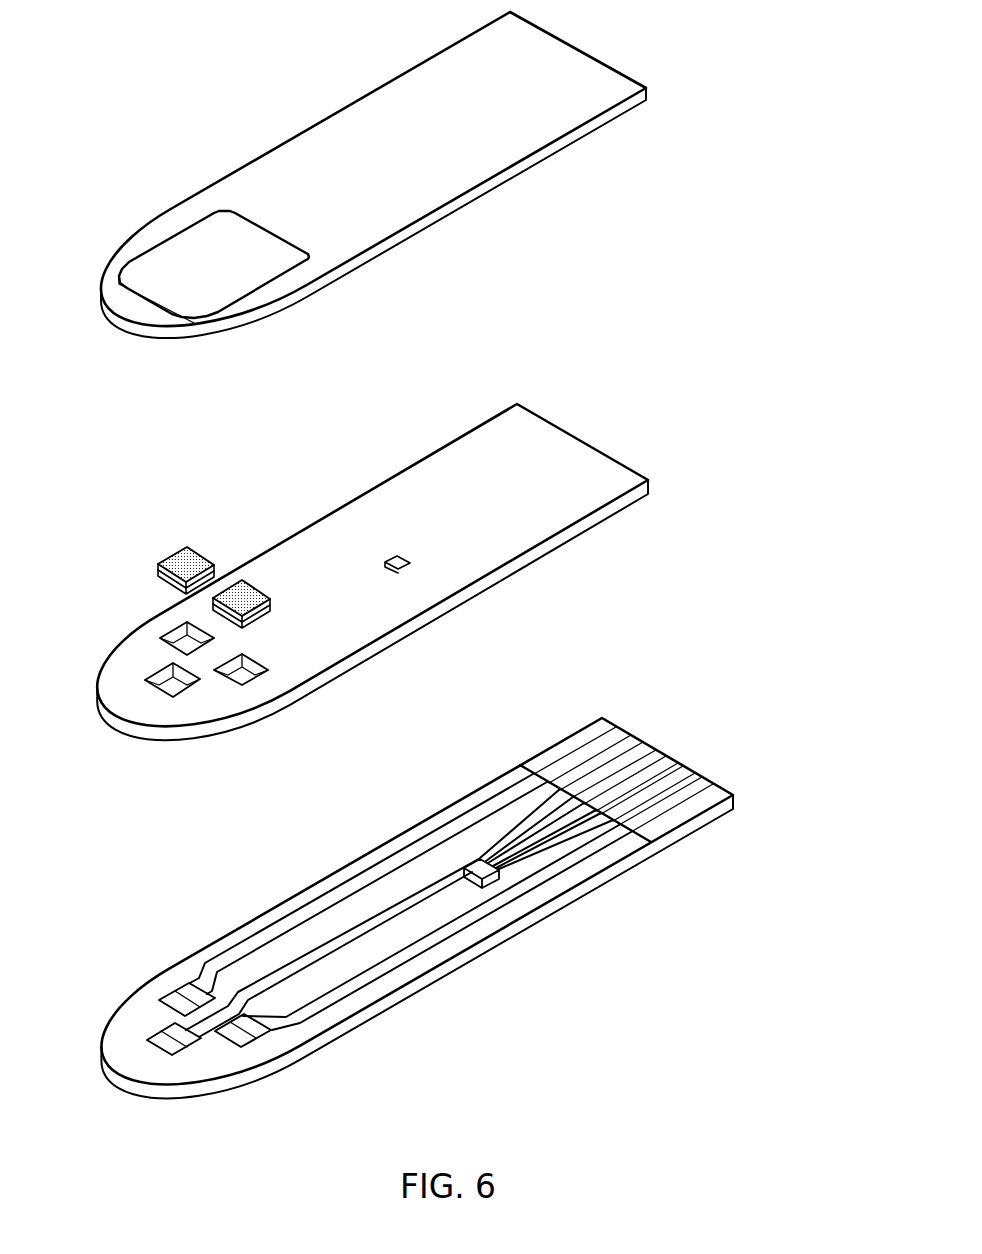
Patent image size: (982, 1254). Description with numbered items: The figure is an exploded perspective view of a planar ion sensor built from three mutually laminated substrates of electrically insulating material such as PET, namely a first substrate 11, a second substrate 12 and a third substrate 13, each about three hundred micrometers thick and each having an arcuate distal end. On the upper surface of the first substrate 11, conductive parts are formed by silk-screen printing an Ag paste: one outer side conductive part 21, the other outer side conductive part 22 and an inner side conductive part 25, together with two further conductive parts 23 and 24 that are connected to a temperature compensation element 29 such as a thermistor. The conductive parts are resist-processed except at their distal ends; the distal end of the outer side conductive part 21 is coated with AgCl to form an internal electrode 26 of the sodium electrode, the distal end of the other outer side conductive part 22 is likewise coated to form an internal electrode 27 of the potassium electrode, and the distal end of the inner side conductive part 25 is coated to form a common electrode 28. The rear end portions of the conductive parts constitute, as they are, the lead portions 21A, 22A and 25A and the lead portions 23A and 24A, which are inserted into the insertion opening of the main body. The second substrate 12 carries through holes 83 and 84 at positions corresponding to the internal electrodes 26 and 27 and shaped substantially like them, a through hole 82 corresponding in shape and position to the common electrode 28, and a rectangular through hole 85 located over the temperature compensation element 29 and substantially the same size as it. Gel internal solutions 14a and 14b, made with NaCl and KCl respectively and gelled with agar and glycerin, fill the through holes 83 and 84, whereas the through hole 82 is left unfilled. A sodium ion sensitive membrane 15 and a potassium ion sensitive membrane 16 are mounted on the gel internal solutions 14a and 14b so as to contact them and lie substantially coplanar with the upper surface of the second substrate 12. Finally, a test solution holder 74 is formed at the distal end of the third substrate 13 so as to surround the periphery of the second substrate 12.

The first substrate 11 is at (612, 880).
The second substrate 12 is at (523, 563).
The third substrate 13 is at (485, 187).
The gel internal solution 14a is at (160, 568).
The gel internal solution 14b is at (270, 602).
The sodium ion sensitive membrane 15 is at (180, 550).
The potassium ion sensitive membrane 16 is at (257, 586).
The outer side conductive part 21 is at (345, 900).
The outer side conductive part 22 is at (358, 983).
The conductive part 23 is at (528, 842).
The conductive part 24 is at (550, 855).
The inner side conductive part 25 is at (390, 898).
The internal electrode 26 is at (160, 1000).
The internal electrode 27 is at (262, 1044).
The common electrode 28 is at (150, 1040).
The temperature compensation element 29 is at (479, 883).
The lead portion 21A is at (627, 730).
The lead portion 22A is at (717, 777).
The lead portion 23A is at (690, 767).
The lead portion 24A is at (700, 770).
The lead portion 25A is at (653, 745).
The test solution holder 74 is at (98, 282).
The through hole 82 is at (170, 683).
The through hole 83 is at (188, 640).
The through hole 84 is at (253, 676).
The rectangular through hole 85 is at (398, 556).